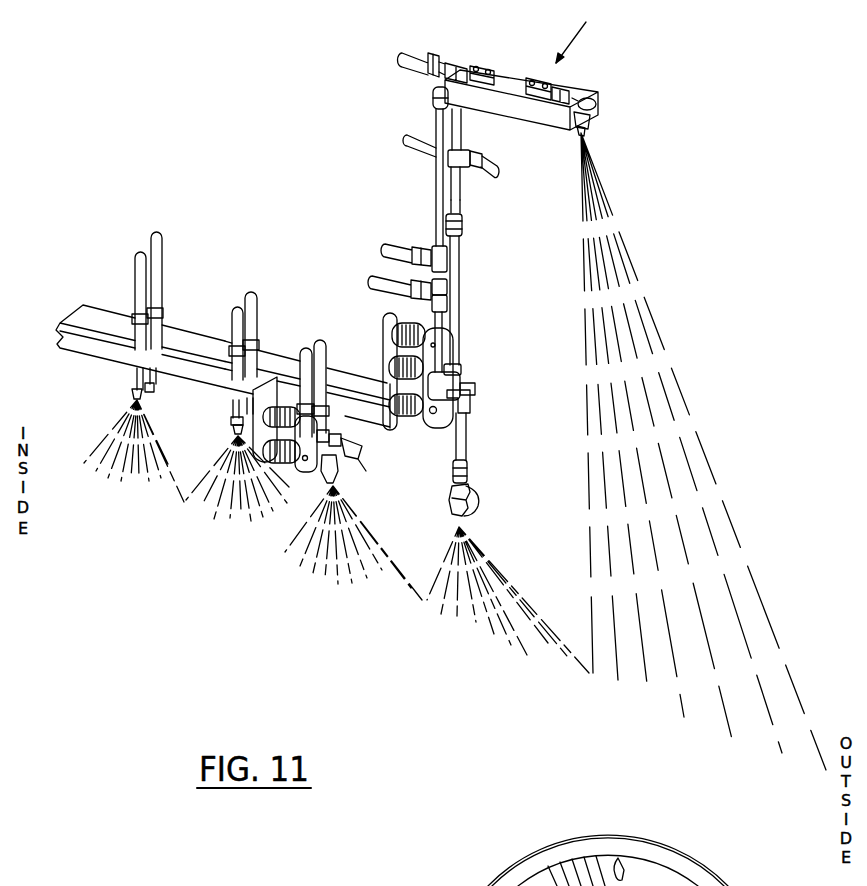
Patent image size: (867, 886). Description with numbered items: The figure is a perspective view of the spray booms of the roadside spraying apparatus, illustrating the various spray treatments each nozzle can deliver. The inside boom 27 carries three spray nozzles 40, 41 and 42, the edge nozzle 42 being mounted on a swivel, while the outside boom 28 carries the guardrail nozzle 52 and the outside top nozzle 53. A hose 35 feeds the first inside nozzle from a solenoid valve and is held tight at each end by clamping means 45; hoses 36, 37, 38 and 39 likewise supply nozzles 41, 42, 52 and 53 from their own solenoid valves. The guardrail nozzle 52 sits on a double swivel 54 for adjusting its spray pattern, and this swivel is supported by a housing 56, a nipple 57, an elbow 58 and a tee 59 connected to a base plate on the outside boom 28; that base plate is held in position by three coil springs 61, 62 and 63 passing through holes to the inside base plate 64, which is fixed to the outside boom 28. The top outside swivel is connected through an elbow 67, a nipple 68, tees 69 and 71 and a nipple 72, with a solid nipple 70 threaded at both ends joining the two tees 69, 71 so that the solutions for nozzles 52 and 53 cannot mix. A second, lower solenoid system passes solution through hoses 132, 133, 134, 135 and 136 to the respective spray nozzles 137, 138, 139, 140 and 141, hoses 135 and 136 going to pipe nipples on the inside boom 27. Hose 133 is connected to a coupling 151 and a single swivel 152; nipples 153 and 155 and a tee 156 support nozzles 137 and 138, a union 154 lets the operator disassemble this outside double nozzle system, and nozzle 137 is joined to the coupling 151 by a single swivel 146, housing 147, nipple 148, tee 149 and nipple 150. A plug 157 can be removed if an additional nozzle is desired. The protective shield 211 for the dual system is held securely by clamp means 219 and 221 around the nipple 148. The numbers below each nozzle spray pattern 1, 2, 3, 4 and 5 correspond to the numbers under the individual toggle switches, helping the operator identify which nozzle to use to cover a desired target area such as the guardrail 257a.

The nozzle spray pattern number 1 is at (703, 483).
The nozzle spray pattern number 2 is at (500, 634).
The nozzle spray pattern number 3 is at (336, 593).
The nozzle spray pattern number 4 is at (222, 520).
The nozzle spray pattern number 5 is at (115, 479).
The inside boom 27 is at (80, 346).
The outside boom 28 is at (340, 382).
The hose 35 is at (136, 278).
The hose 36 is at (232, 318).
The hose 37 is at (301, 353).
The hose 38 is at (380, 279).
The hose 39 is at (393, 246).
The spray nozzle 40 is at (132, 397).
The spray nozzle 41 is at (232, 420).
The edge nozzle 42 is at (327, 481).
The clamping means 45 is at (160, 310).
The guardrail nozzle 52 is at (478, 514).
The outside top nozzle 53 is at (586, 128).
The double swivel 54 is at (452, 493).
The housing 56 is at (468, 467).
The nipple 57 is at (468, 437).
The elbow 58 is at (471, 405).
The tee 59 is at (448, 401).
The coil spring 61 is at (410, 414).
The coil spring 62 is at (390, 356).
The coil spring 63 is at (411, 326).
The inside base plate 64 is at (384, 316).
The elbow 67 is at (433, 95).
The nipple 68 is at (436, 188).
The tee 69 is at (434, 251).
The solid nipple 70 is at (447, 283).
The tee 71 is at (447, 300).
The nipple 72 is at (446, 320).
The hose 132 is at (424, 58).
The hose 133 is at (417, 146).
The hose 134 is at (323, 348).
The hose 135 is at (254, 312).
The hose 136 is at (160, 260).
The spray nozzle 137 is at (591, 116).
The spray nozzle 138 is at (492, 173).
The spray nozzle 139 is at (361, 452).
The spray nozzle 140 is at (233, 437).
The spray nozzle 141 is at (152, 392).
The single swivel 146 is at (597, 100).
The housing 147 is at (564, 89).
The nipple 148 is at (518, 84).
The tee 149 is at (465, 66).
The nipple 150 is at (462, 125).
The coupling 151 is at (463, 168).
The single swivel 152 is at (484, 158).
The nipple 153 is at (461, 202).
The union 154 is at (463, 227).
The nipple 155 is at (461, 267).
The tee 156 is at (462, 369).
The plug 157 is at (476, 389).
The protective shield 211 is at (581, 32).
The clamp means 219 is at (490, 66).
The clamp means 221 is at (545, 79).
The guardrail 257a is at (608, 871).